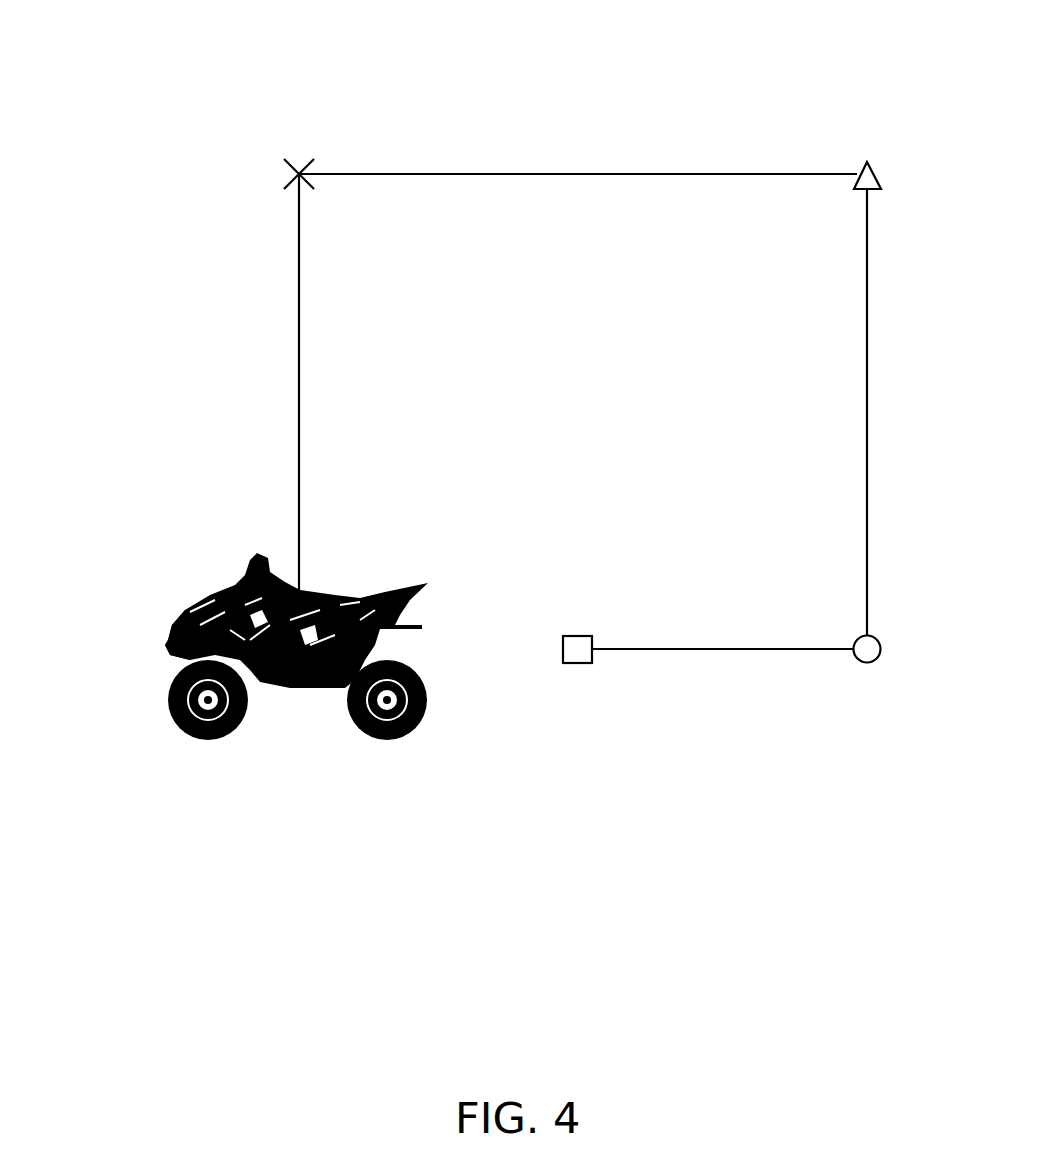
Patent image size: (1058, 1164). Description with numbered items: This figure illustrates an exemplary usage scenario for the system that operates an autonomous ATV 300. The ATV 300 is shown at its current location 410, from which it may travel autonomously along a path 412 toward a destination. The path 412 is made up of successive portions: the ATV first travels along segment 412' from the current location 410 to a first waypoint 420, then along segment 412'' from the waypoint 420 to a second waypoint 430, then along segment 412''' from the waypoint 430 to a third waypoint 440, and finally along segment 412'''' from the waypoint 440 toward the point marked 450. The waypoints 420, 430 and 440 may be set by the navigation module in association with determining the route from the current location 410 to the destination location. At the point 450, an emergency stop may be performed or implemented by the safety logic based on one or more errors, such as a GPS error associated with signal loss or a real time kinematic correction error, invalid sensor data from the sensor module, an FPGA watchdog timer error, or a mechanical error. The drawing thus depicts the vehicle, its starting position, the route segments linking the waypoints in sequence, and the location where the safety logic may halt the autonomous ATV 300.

The vehicle (ATV) 300 is at (280, 710).
The current location 410 is at (157, 648).
The path 412 is at (437, 57).
The path segment 412' is at (255, 383).
The path segment 412'' is at (578, 213).
The path segment 412''' is at (807, 412).
The path segment 412'''' is at (722, 613).
The waypoint 420 is at (299, 174).
The waypoint 430 is at (873, 172).
The waypoint 440 is at (865, 662).
The emergency stop location 450 is at (575, 665).